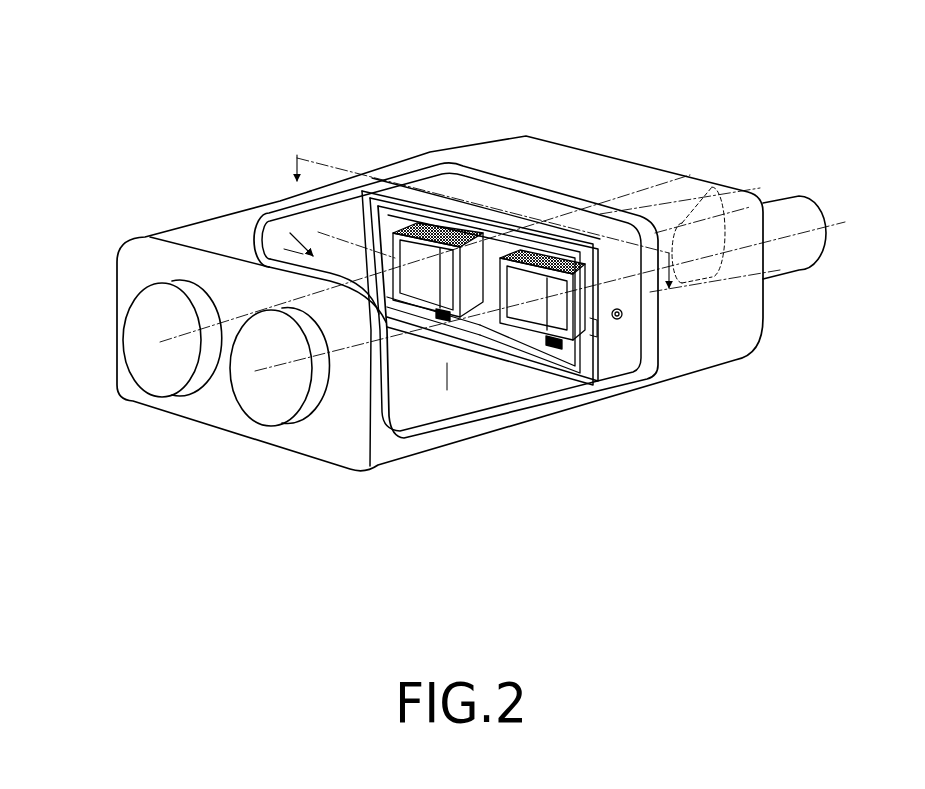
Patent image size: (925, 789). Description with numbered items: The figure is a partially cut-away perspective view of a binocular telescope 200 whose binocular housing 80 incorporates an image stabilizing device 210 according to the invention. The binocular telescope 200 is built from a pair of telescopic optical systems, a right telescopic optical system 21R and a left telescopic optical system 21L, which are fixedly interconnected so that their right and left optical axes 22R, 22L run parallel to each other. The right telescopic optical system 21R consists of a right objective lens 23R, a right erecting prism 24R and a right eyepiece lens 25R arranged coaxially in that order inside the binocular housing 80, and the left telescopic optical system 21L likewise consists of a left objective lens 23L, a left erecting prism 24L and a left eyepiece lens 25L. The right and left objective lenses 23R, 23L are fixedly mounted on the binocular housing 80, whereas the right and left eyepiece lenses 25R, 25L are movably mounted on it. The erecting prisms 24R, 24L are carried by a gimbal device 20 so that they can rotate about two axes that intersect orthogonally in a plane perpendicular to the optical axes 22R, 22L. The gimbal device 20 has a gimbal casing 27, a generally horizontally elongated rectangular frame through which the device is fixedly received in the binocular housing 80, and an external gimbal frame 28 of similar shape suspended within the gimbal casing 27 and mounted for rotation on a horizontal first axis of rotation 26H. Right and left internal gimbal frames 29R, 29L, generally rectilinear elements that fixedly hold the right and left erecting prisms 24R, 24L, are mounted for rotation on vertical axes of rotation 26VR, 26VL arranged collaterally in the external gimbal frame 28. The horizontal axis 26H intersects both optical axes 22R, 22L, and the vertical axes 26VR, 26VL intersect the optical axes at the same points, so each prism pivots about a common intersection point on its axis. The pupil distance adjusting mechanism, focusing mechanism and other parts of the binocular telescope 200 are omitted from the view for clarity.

The binocular telescope 200 is at (124, 219).
The binocular housing 80 is at (180, 231).
The image stabilizing device 210 is at (260, 208).
The gimbal device 20 is at (511, 212).
The left telescopic optical system 21L is at (132, 404).
The right telescopic optical system 21R is at (237, 434).
The left optical axis 22L is at (172, 335).
The right optical axis 22R is at (281, 372).
The left objective lens 23L is at (132, 334).
The right objective lens 23R is at (317, 418).
The left erecting prism 24L is at (357, 240).
The right erecting prism 24R is at (535, 320).
The left eyepiece lens 25L is at (687, 168).
The right eyepiece lens 25R is at (795, 196).
The left vertical axis of rotation 26VL is at (447, 231).
The right vertical axis of rotation 26VR is at (557, 252).
The horizontal first axis of rotation 26H is at (622, 321).
The gimbal casing 27 is at (612, 364).
The external gimbal frame 28 is at (381, 212).
The left internal gimbal frame 29L is at (417, 338).
The right internal gimbal frame 29R is at (552, 345).